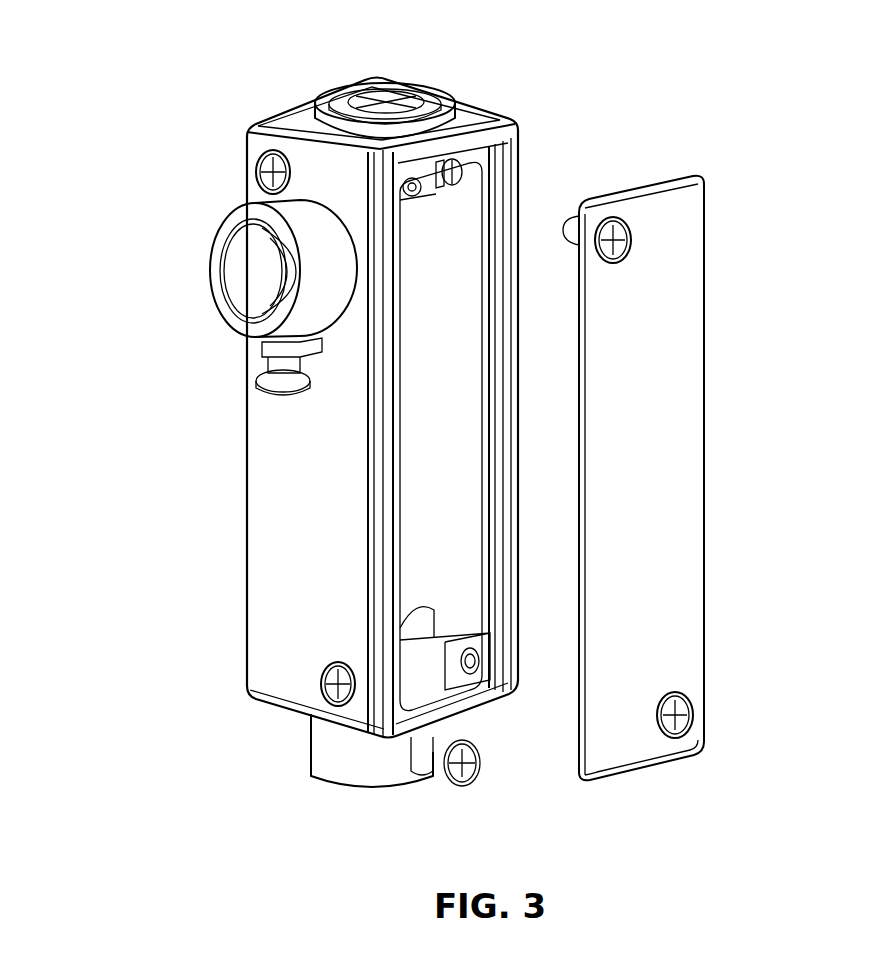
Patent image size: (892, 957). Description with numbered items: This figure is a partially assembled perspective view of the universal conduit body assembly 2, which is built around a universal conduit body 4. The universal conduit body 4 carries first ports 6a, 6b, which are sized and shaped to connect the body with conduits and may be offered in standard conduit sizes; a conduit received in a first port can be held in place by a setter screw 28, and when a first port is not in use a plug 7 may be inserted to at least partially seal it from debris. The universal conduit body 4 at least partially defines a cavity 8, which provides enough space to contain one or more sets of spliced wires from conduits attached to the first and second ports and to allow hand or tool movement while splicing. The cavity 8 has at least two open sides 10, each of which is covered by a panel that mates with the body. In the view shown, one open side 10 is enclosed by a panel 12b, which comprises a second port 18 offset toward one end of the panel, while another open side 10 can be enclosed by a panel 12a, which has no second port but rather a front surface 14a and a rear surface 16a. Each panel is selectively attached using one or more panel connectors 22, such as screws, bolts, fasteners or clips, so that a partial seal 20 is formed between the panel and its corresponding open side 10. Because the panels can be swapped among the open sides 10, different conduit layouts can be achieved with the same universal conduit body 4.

The universal conduit body assembly 2 is at (160, 87).
The universal conduit body 4 is at (311, 430).
The first port 6a is at (396, 775).
The first port 6b is at (455, 108).
The plug 7 is at (420, 105).
The cavity 8 is at (430, 543).
The open side 10 is at (460, 232).
The panel 12a is at (668, 457).
The panel 12b is at (270, 490).
The front surface 14a is at (694, 256).
The rear surface 16a is at (676, 178).
The second port 18 is at (273, 210).
The partial seal 20 is at (302, 118).
The panel connector 22 is at (618, 232).
The setter screw 28 is at (275, 378).